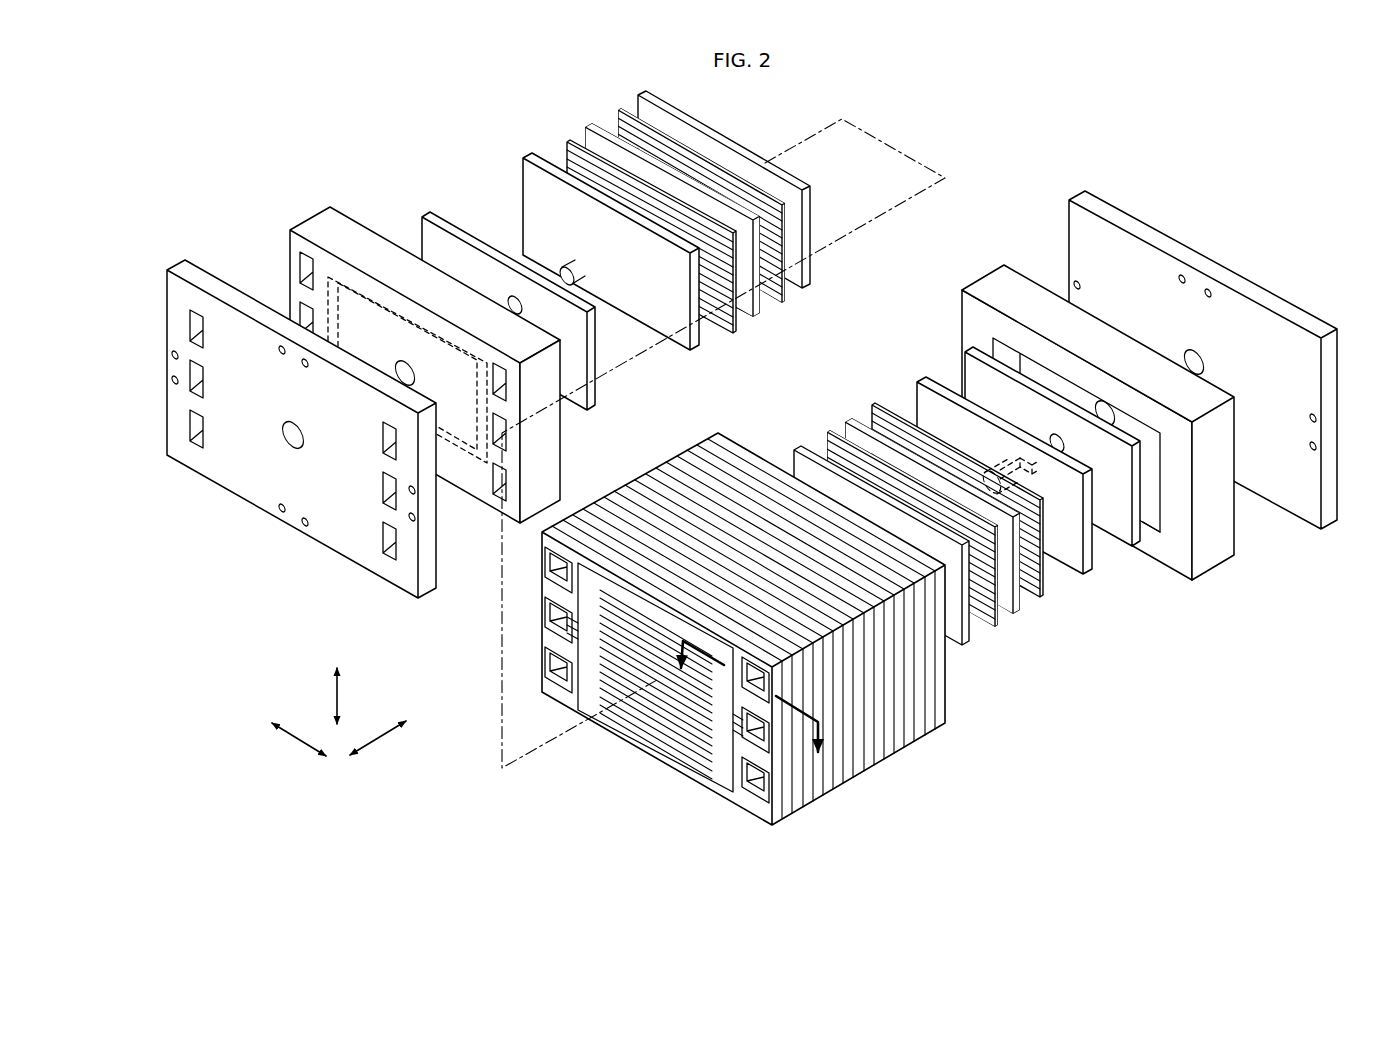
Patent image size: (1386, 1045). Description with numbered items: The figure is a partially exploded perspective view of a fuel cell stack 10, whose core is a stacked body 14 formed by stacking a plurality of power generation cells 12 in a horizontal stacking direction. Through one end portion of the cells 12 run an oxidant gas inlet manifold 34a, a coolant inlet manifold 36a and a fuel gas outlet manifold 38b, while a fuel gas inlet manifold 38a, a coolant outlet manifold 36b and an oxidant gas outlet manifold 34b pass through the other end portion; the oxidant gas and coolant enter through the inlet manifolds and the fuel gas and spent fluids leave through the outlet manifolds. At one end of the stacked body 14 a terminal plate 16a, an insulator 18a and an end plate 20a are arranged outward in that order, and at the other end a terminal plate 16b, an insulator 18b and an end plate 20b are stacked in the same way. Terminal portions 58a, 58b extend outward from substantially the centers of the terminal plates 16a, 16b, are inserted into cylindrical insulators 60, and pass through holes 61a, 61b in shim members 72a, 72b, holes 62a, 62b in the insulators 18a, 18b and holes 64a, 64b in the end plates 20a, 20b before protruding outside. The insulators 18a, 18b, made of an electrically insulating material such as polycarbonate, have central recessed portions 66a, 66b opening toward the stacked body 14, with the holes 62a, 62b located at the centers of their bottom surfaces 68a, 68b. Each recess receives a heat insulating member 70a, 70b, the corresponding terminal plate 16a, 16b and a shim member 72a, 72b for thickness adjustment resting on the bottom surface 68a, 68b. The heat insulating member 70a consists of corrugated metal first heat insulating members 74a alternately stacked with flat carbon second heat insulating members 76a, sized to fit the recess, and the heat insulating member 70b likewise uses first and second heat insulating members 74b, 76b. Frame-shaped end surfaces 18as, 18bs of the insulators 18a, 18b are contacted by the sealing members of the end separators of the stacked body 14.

The fuel cell stack 10 is at (882, 87).
The power generation cell 12 is at (896, 753).
The stacked body 14 is at (772, 629).
The terminal plate 16a is at (527, 184).
The terminal plate 16b is at (925, 400).
The insulator 18a is at (468, 340).
The frame-shaped end surface 18as is at (556, 441).
The insulator 18b is at (1103, 464).
The frame-shaped end surface 18bs is at (1212, 578).
The end plate 20a is at (203, 262).
The end plate 20b is at (1130, 205).
The oxidant gas inlet manifold 34a is at (382, 434).
The oxidant gas outlet manifold 34b is at (204, 430).
The coolant inlet manifold 36a is at (382, 484).
The coolant outlet manifold 36b is at (204, 382).
The fuel gas inlet manifold 38a is at (204, 332).
The fuel gas outlet manifold 38b is at (382, 534).
The terminal portion 58a is at (583, 251).
The terminal portion 58b is at (1030, 445).
The cylindrical insulator 60 is at (995, 455).
The hole 61a is at (524, 306).
The hole 61b is at (1067, 446).
The hole 62a is at (415, 367).
The hole 62b is at (1110, 412).
The hole 64a is at (295, 447).
The hole 64b is at (1206, 364).
The recessed portion 66a is at (453, 438).
The recessed portion 66b is at (1152, 515).
The bottom surface 68a is at (348, 327).
The bottom surface 68b is at (1073, 393).
The heat insulating member 70a is at (658, 240).
The heat insulating member 70b is at (895, 554).
The shim member 72a is at (447, 218).
The shim member 72b is at (1118, 545).
The first heat insulating member 74a is at (723, 332).
The first heat insulating member 74b is at (991, 628).
The second heat insulating member 76a is at (742, 318).
The second heat insulating member 76b is at (965, 647).